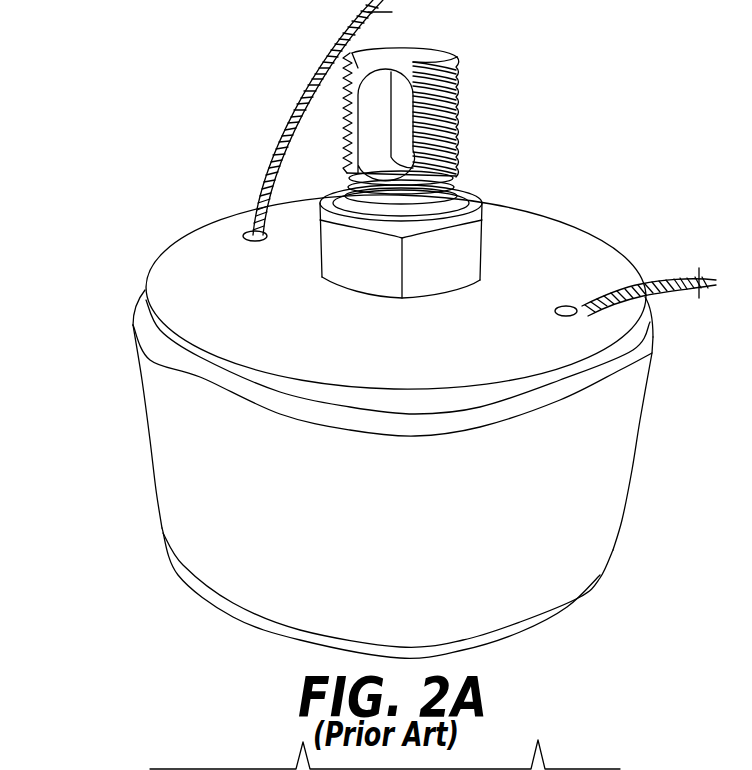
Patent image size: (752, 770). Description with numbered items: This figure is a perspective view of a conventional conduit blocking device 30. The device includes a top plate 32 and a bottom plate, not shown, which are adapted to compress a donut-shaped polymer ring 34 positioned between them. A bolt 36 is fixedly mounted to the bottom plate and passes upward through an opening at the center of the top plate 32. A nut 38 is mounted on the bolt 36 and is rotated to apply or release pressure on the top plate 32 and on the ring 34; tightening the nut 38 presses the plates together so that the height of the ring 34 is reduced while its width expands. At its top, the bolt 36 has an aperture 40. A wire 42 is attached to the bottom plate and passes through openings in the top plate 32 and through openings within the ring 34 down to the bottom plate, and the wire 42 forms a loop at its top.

The conduit blocking device 30 is at (78, 178).
The top plate 32 is at (215, 244).
The donut-shaped polymer ring 34 is at (160, 530).
The bolt 36 is at (453, 179).
The nut 38 is at (489, 244).
The aperture 40 is at (395, 116).
The wire 42 is at (291, 132).